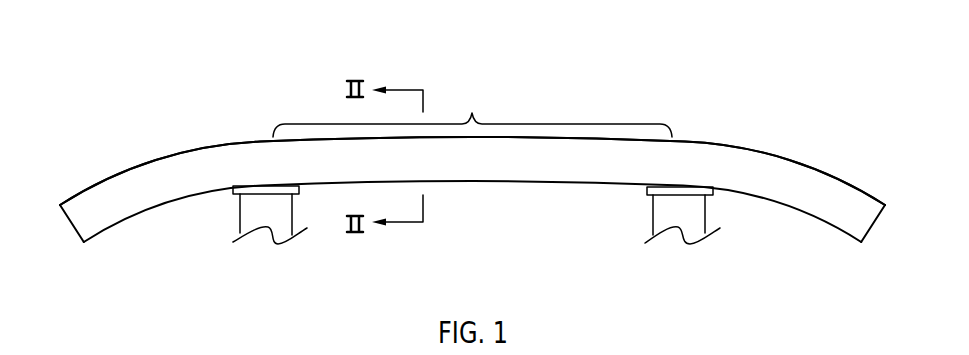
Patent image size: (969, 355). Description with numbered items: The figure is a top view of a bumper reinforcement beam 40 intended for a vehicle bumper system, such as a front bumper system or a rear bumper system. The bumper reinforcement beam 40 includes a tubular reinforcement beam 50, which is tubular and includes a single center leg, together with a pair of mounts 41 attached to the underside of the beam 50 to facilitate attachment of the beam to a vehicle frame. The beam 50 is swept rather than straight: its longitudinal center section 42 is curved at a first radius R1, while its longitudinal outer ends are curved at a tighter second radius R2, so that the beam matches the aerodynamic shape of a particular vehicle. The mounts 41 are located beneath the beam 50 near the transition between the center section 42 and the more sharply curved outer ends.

The bumper reinforcement beam 40 is at (130, 127).
The tubular reinforcement beam 50 is at (243, 130).
The longitudinal center section 42 is at (472, 110).
The mounts 41 is at (300, 190).
The first radius R1 is at (487, 190).
The second radius R2 is at (162, 219).